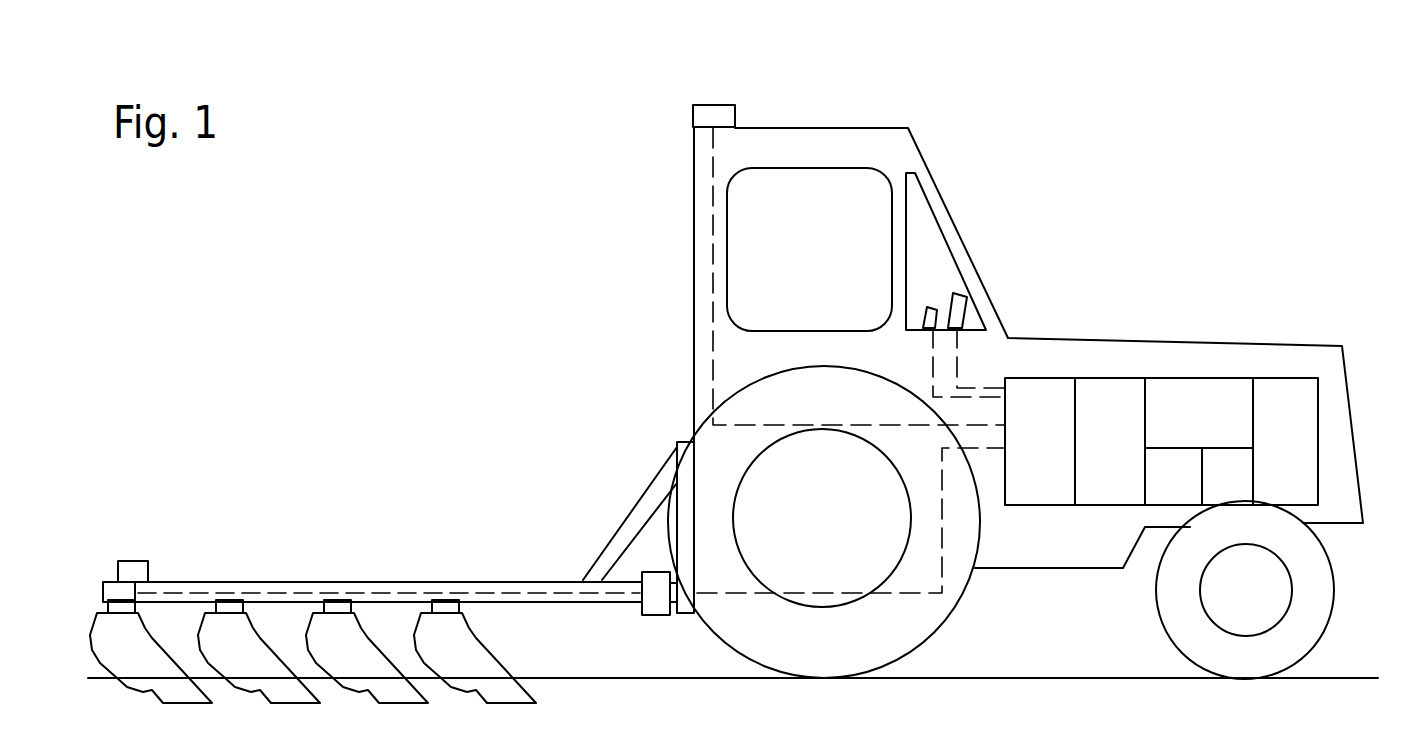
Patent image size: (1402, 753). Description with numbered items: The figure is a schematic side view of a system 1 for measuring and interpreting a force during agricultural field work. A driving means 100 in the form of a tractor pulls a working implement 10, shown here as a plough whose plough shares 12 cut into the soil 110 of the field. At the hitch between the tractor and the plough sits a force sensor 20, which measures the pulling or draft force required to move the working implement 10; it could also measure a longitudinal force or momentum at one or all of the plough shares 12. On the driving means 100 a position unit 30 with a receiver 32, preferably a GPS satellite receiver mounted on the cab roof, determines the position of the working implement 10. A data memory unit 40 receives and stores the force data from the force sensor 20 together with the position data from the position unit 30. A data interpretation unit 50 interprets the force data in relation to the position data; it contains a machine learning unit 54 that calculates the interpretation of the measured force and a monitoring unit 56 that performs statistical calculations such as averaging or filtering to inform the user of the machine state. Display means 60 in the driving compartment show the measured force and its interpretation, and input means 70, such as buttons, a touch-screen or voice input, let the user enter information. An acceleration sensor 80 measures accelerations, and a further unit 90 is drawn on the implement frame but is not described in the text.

The system 1 is at (509, 142).
The working implement 10 is at (360, 585).
The plough shares 12 is at (143, 658).
The force sensor 20 is at (648, 587).
The position unit 30 is at (1051, 422).
The receiver 32 is at (710, 115).
The data memory unit 40 is at (1119, 422).
The data interpretation unit 50 is at (1213, 422).
The machine learning unit 54 is at (1188, 490).
The monitoring unit 56 is at (1241, 490).
The display means 60 is at (960, 312).
The input means 70 is at (933, 312).
The acceleration sensor 80 is at (1301, 430).
The implement sensor 90 is at (137, 572).
The driving means 100 is at (1190, 358).
The soil 110 is at (812, 715).